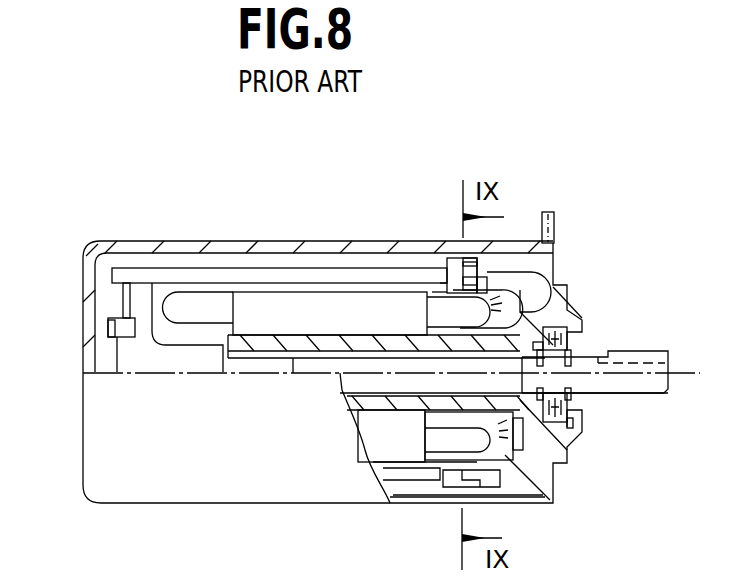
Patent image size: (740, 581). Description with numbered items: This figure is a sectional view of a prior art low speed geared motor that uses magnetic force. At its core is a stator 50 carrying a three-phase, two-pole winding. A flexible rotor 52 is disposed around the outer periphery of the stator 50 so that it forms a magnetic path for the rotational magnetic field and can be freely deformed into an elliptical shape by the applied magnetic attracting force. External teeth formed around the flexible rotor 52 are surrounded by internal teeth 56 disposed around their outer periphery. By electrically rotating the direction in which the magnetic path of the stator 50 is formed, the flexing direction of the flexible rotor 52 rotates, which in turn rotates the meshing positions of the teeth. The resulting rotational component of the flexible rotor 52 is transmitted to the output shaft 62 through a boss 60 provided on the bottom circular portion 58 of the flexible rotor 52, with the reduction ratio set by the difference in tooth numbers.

The stator 50 is at (342, 320).
The flexible rotor 52 is at (213, 268).
The internal teeth 56 is at (468, 280).
The bottom circular portion 58 is at (105, 275).
The boss 60 is at (152, 343).
The output shaft 62 is at (588, 356).